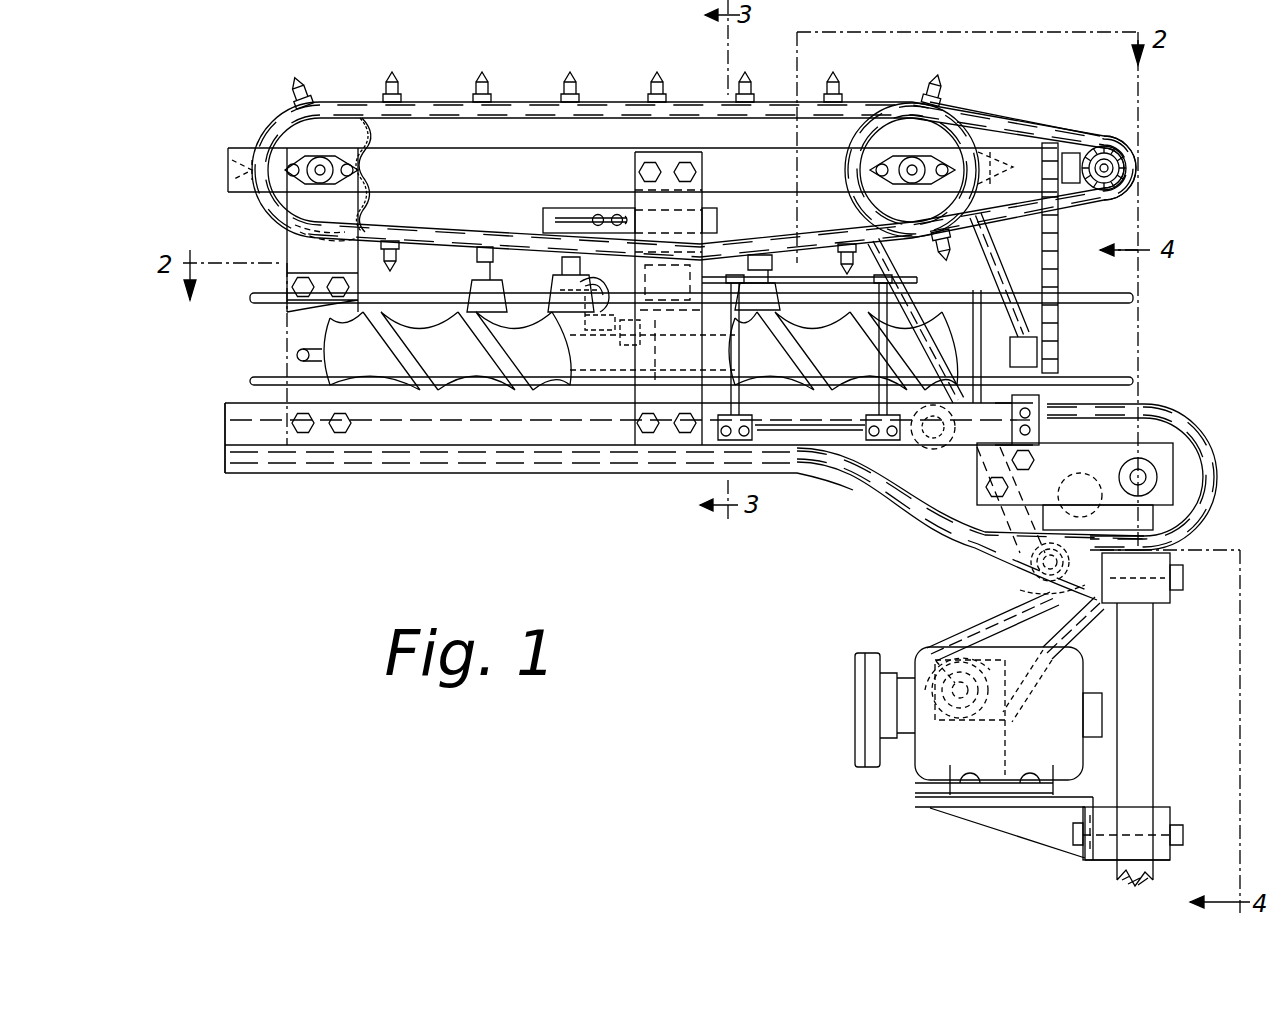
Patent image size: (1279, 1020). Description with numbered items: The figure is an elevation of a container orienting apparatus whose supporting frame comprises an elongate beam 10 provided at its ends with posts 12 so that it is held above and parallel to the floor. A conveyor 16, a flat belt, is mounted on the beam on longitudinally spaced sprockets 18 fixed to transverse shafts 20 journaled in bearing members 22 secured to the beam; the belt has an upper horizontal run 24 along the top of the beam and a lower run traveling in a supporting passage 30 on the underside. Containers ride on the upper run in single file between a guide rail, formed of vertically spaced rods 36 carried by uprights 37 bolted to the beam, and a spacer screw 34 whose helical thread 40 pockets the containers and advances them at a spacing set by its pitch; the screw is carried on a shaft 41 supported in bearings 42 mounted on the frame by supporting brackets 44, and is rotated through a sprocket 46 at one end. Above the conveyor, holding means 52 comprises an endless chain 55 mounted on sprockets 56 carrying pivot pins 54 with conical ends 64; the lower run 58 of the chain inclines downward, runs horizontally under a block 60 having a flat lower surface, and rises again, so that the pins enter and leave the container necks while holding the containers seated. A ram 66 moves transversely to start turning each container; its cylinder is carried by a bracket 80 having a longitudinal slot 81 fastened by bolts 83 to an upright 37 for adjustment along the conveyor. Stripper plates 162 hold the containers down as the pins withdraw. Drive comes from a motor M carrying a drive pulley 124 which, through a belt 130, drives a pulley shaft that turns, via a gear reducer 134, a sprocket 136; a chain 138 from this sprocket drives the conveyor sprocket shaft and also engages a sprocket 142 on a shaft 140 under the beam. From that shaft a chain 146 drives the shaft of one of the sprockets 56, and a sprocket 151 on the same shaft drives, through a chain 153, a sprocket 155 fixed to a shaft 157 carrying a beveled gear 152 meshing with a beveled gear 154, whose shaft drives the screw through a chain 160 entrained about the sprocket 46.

The elongate beam 10 is at (225, 432).
The posts 12 is at (1152, 722).
The conveyor 16 is at (908, 524).
The sprockets 18 is at (1075, 498).
The shafts 20 is at (1152, 492).
The bearing members 22 is at (1158, 472).
The upper horizontal run 24 is at (1178, 408).
The supporting passage 30 is at (562, 472).
The spacer screw 34 is at (420, 392).
The rods 36 is at (250, 379).
The uprights 37 is at (704, 181).
The helical thread 40 is at (418, 330).
The shaft 41 is at (300, 352).
The bearings 42 is at (1032, 328).
The supporting brackets 44 is at (1040, 416).
The sprocket 46 is at (1040, 362).
The holding means 52 is at (602, 90).
The pivot pins 54 is at (566, 80).
The endless chain 55 is at (678, 100).
The sprockets 56 is at (328, 122).
The lower run 58 is at (412, 240).
The block 60 is at (616, 214).
The conical ends 64 is at (397, 78).
The ram 66 is at (580, 268).
The bracket 80 is at (718, 221).
The longitudinal slot 81 is at (553, 218).
The bolts 83 is at (596, 214).
The drive pulley 124 is at (855, 732).
The belt 130 is at (862, 655).
The gear reducer 134 is at (1005, 716).
The sprocket 136 is at (1000, 731).
The chain 138 is at (1075, 635).
The shaft 140 is at (1030, 568).
The sprocket 142 is at (1020, 592).
The chain 146 is at (993, 252).
The sprocket 151 is at (906, 128).
The beveled gear 152 is at (1128, 150).
The chain 153 is at (1003, 120).
The beveled gear 154 is at (1078, 153).
The sprocket 155 is at (1138, 167).
The shaft 157 is at (1132, 190).
The chain 160 is at (1058, 262).
The stripper plates 162 is at (802, 276).
The motor M is at (915, 770).